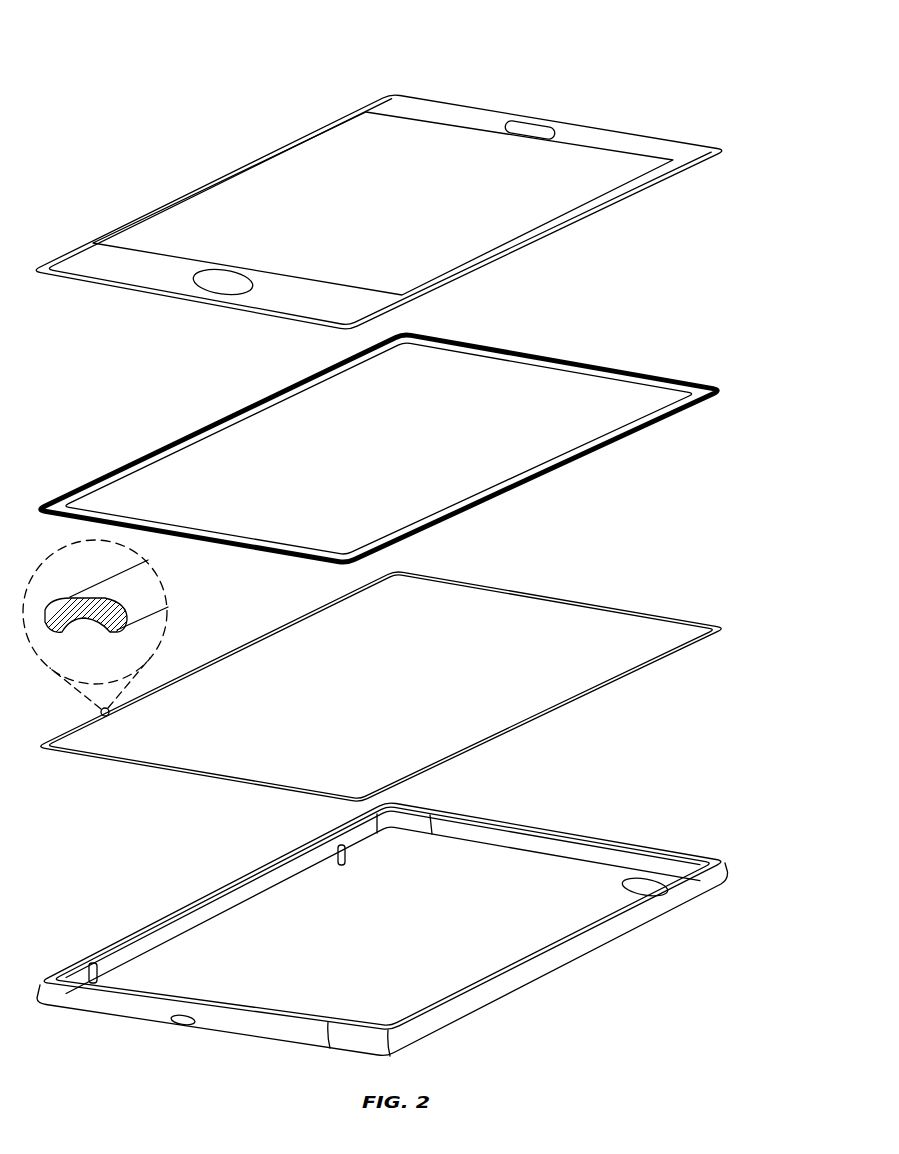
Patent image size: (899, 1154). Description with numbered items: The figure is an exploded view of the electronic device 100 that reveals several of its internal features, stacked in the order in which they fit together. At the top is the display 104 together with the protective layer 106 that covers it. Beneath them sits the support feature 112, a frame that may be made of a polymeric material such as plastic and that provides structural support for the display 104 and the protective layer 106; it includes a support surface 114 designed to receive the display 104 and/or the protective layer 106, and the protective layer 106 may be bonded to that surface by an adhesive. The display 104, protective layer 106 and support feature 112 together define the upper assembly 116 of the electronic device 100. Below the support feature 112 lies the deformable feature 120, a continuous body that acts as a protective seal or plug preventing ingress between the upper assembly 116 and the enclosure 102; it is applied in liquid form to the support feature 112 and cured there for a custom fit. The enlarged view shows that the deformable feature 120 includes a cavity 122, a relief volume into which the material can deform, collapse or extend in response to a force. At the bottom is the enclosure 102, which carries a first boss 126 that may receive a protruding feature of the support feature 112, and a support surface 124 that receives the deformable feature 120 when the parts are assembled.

The electronic device 100 is at (68, 78).
The enclosure 102 is at (598, 990).
The display 104 is at (440, 212).
The protective layer 106 is at (607, 148).
The support feature 112 is at (588, 328).
The support surface 114 is at (707, 385).
The upper assembly 116 is at (733, 130).
The deformable feature 120 is at (631, 580).
The cavity 122 is at (64, 648).
The support surface 124 is at (48, 978).
The first boss 126 is at (340, 848).